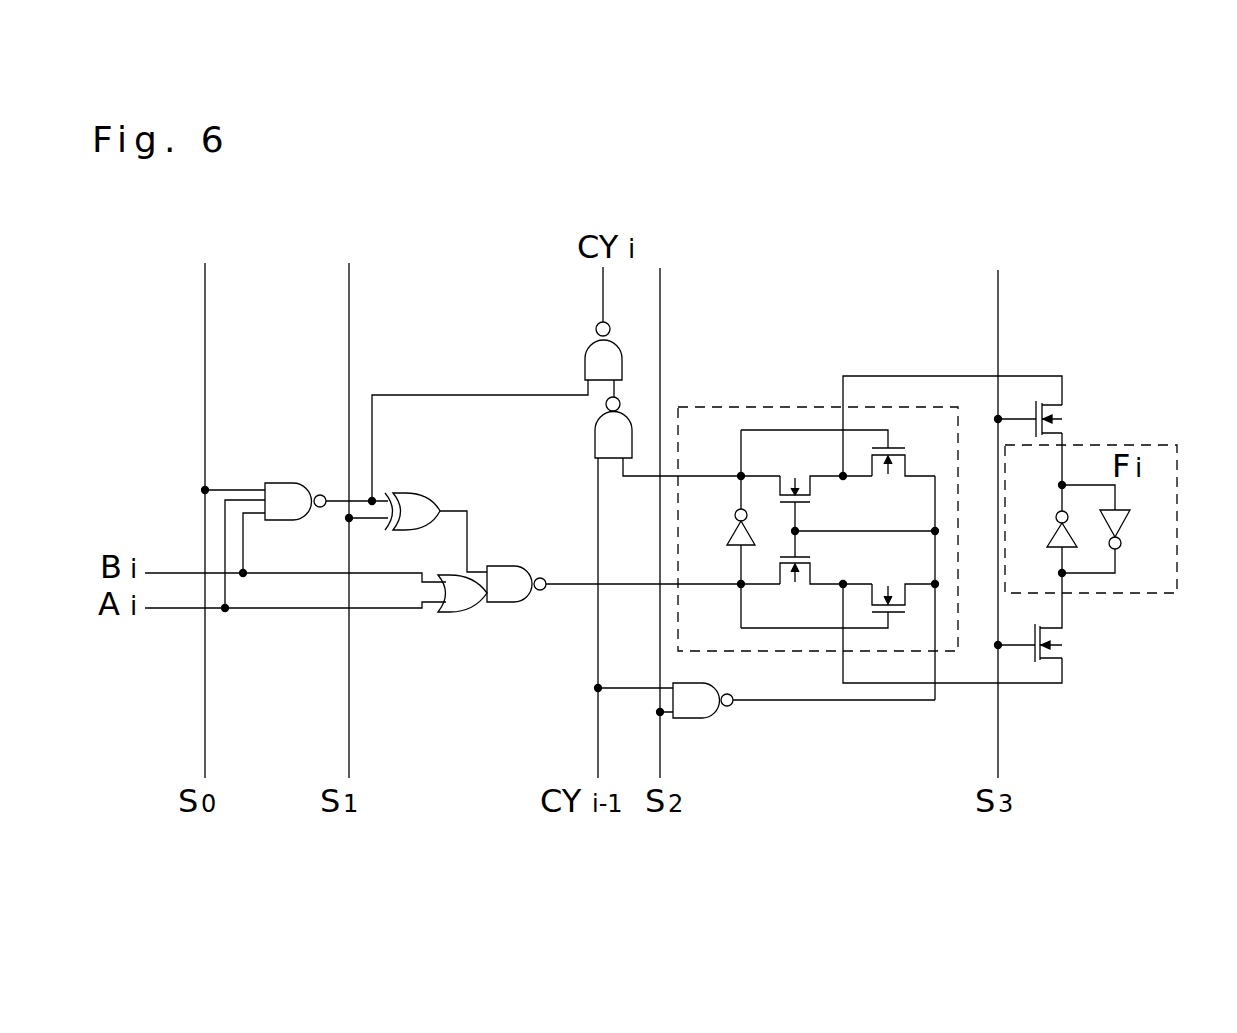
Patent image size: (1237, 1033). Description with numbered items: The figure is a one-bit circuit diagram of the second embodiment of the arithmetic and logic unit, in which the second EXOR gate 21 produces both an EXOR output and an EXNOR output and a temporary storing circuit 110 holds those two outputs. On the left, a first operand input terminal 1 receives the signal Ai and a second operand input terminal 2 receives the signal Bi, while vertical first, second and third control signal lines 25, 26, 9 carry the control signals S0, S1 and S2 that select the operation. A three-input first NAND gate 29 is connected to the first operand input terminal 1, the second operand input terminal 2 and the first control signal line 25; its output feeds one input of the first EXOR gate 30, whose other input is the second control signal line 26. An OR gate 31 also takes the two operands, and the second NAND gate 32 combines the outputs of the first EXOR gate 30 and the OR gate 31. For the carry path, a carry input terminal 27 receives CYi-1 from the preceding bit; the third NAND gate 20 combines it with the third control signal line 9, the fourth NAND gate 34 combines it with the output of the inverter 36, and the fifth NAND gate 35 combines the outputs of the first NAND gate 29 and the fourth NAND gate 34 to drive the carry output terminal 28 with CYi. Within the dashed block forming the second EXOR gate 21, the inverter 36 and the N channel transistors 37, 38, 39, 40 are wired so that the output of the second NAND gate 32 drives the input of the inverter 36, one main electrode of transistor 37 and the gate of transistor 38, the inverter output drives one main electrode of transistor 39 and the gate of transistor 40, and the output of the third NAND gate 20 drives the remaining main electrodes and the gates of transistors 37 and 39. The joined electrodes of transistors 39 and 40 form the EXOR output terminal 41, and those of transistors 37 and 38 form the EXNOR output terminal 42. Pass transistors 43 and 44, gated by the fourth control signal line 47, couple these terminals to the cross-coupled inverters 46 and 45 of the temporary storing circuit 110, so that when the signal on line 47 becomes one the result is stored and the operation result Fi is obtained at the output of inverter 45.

The first operand input terminal 1 is at (177, 612).
The second operand input terminal 2 is at (176, 572).
The third control signal line 9 is at (660, 306).
The third NAND gate 20 is at (702, 718).
The second EXOR gate 21 is at (735, 405).
The first control signal line 25 is at (205, 295).
The second control signal line 26 is at (349, 295).
The carry input terminal 27 is at (598, 749).
The carry output terminal 28 is at (603, 279).
The first NAND gate 29 is at (283, 483).
The first EXOR gate 30 is at (402, 493).
The OR gate 31 is at (457, 612).
The second NAND gate 32 is at (508, 602).
The fourth NAND gate 34 is at (595, 439).
The fifth NAND gate 35 is at (585, 355).
The inverter 36 is at (730, 533).
The N channel transistor 37 is at (798, 587).
The N channel transistor 38 is at (896, 585).
The N channel transistor 39 is at (800, 473).
The N channel transistor 40 is at (888, 480).
The EXOR output terminal 41 is at (905, 374).
The EXNOR output terminal 42 is at (967, 685).
The N channel transistor 43 is at (1068, 410).
The N channel transistor 44 is at (1070, 648).
The inverter 45 is at (1050, 538).
The inverter 46 is at (1128, 525).
The fourth control signal line 47 is at (1000, 310).
The temporary storing circuit 110 is at (1143, 443).